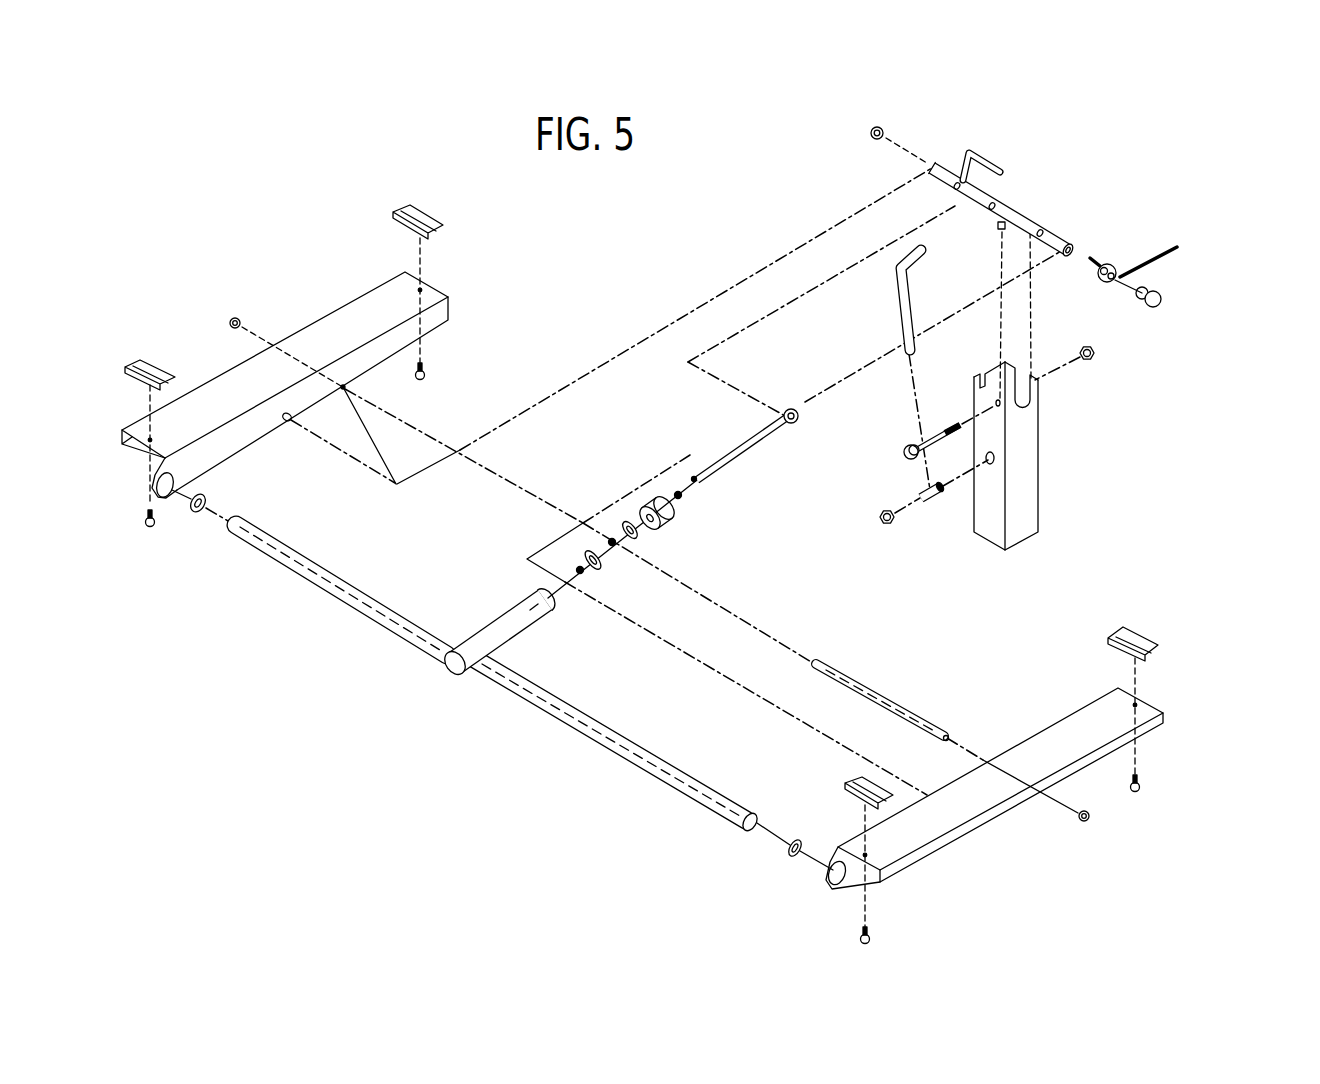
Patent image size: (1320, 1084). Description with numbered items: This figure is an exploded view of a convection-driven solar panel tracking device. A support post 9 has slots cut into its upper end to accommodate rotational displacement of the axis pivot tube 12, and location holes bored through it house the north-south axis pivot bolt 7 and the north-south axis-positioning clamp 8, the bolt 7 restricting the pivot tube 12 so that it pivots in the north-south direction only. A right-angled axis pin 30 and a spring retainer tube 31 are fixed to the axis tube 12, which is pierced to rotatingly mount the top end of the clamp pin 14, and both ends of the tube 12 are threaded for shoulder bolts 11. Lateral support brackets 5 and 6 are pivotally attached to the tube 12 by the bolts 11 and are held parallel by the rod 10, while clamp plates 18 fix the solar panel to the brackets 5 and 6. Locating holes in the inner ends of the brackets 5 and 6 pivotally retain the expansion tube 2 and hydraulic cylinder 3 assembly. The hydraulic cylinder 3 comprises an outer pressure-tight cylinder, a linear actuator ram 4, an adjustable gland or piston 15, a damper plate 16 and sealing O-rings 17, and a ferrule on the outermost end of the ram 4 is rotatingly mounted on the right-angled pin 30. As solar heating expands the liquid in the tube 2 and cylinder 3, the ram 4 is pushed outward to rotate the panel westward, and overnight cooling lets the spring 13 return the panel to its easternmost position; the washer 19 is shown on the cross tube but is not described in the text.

The expansion tube 2 is at (318, 597).
The hydraulic cylinder 3 is at (493, 603).
The linear actuator ram 4 is at (732, 465).
The lateral support bracket 5 is at (321, 307).
The lateral support bracket 6 is at (947, 861).
The north-south axis pivot bolt 7 is at (900, 454).
The north-south axis-positioning clamp 8 is at (929, 509).
The support post 9 is at (1044, 482).
The rod 10 is at (899, 691).
The shoulder bolt 11 is at (1179, 311).
The axis pivot tube 12 is at (1075, 229).
The spring 13 is at (1160, 262).
The clamp pin 14 is at (891, 309).
The adjustable gland or piston 15 is at (680, 523).
The damper plate 16 is at (593, 582).
The sealing O rings 17 is at (657, 485).
The clamp plate 18 is at (1112, 629).
The washer 19 is at (777, 869).
The right-angled axis pin 30 is at (992, 150).
The spring retainer tube 31 is at (1052, 216).